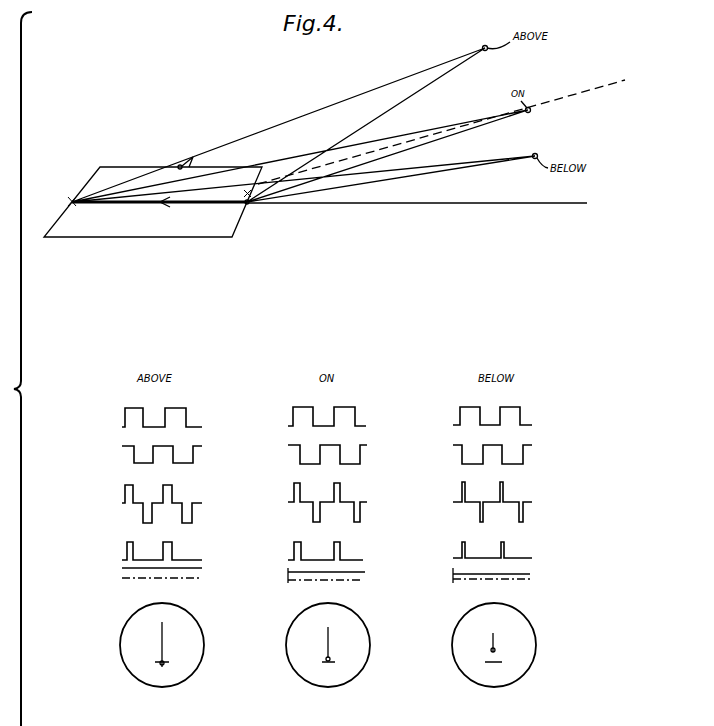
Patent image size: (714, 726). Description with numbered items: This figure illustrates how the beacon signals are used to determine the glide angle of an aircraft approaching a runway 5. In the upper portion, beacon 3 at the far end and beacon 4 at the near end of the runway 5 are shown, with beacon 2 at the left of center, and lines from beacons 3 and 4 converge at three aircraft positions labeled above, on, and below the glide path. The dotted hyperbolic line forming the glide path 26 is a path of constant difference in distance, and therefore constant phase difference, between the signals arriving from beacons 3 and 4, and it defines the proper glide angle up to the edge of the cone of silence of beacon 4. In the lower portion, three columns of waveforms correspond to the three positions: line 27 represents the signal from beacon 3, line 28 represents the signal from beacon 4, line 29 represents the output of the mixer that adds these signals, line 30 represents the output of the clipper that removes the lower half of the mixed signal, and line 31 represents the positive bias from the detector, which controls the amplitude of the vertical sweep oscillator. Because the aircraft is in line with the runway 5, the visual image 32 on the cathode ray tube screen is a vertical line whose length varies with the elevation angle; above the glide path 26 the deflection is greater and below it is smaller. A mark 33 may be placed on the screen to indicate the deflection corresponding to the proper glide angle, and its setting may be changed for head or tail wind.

The beacon 2 is at (136, 239).
The beacon 3 is at (67, 202).
The beacon 4 is at (250, 204).
The runway 5 is at (185, 205).
The glide path 26 is at (608, 86).
The signal from beacon 3 27 is at (121, 421).
The signal from beacon 4 28 is at (121, 459).
The mixer output 29 is at (121, 503).
The clipper output 30 is at (121, 559).
The positive bias 31 is at (553, 568).
The visual image 32 is at (158, 648).
The mark 33 is at (332, 664).